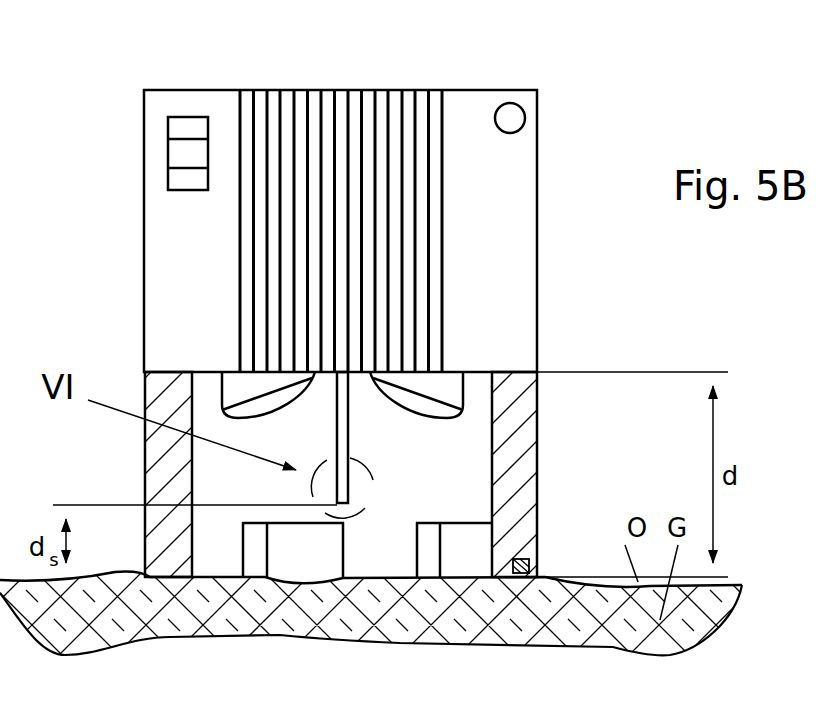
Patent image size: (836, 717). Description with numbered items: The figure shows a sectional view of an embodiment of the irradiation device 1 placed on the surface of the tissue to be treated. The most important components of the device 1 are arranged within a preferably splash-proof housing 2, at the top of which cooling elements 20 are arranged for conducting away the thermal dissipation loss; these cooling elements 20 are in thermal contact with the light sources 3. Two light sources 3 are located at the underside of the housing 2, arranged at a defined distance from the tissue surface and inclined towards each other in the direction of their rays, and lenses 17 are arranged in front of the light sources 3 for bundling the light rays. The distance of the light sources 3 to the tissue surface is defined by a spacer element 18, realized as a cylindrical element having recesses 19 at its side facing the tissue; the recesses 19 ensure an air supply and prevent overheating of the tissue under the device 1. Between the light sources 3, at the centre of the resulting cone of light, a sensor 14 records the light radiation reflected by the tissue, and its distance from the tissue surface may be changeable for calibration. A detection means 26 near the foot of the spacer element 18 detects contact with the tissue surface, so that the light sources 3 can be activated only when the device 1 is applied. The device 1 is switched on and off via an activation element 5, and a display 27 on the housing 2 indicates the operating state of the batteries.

The irradiation device 1 is at (72, 117).
The housing 2 is at (195, 262).
The light sources 3 is at (245, 388).
The activation element 5 is at (197, 150).
The sensor 14 is at (342, 492).
The lenses 17 is at (252, 410).
The spacer element 18 is at (515, 483).
The recesses 19 is at (470, 545).
The cooling elements 20 is at (368, 112).
The detection means 26 is at (527, 560).
The display 27 is at (512, 118).